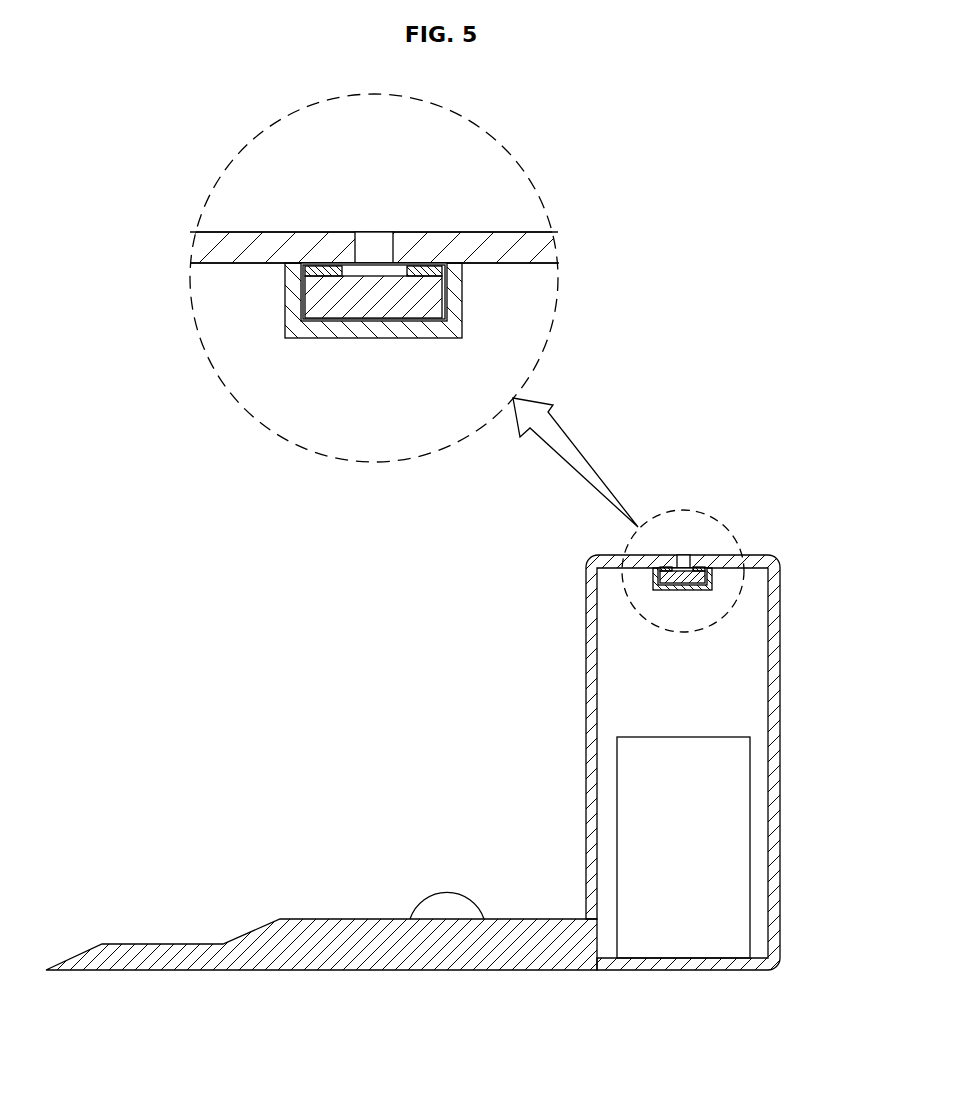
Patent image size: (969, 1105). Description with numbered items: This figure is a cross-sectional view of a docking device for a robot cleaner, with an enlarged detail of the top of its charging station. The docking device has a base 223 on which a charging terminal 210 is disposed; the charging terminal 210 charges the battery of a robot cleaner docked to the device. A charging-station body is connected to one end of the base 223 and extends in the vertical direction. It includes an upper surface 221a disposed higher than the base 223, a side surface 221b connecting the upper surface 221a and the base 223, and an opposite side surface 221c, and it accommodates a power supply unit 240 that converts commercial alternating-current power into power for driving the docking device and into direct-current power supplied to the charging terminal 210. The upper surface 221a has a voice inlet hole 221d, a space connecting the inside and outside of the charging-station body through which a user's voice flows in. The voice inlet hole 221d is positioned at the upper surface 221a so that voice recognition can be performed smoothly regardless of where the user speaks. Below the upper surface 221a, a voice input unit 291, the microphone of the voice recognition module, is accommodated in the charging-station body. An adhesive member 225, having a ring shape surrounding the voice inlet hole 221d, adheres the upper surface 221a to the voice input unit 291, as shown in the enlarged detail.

The charging terminal 210 is at (447, 906).
The upper surface 221a is at (465, 243).
The side surface 221b is at (590, 716).
The right side wall of housing 221c is at (775, 801).
The voice inlet hole 221d is at (372, 243).
The base 223 is at (473, 951).
The adhesive member 225 is at (420, 270).
The power supply unit 240 is at (676, 941).
The voice input unit 291 is at (423, 297).